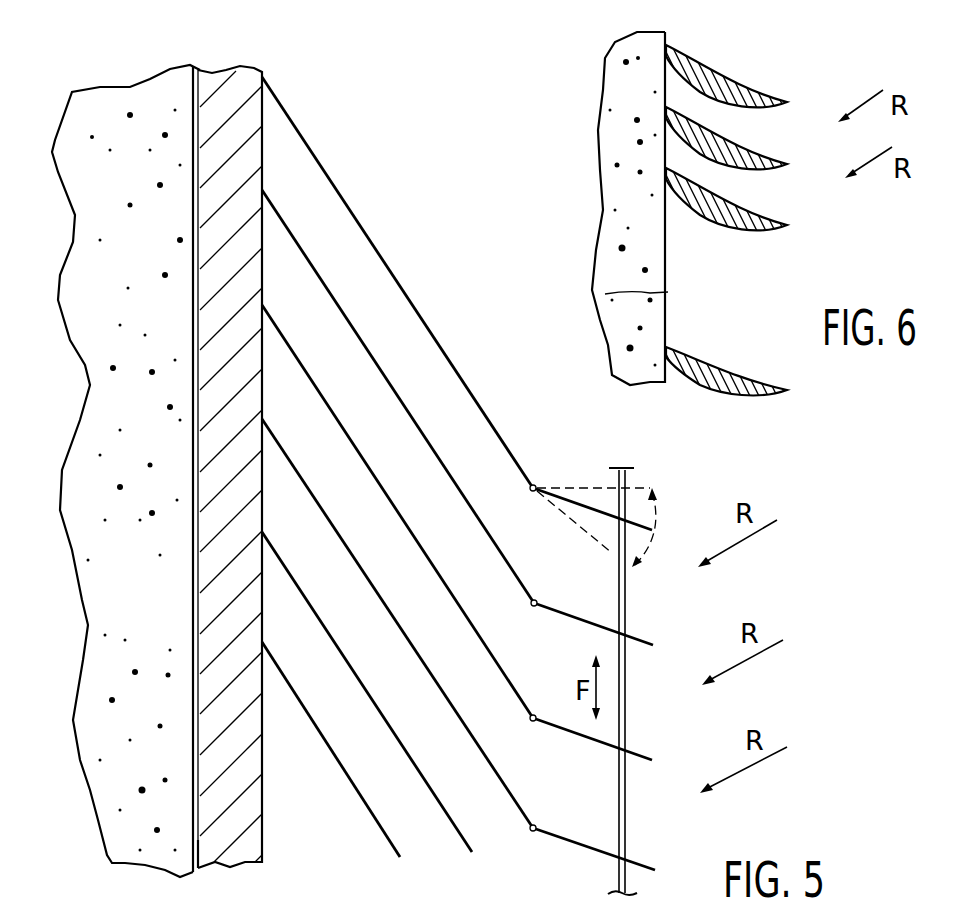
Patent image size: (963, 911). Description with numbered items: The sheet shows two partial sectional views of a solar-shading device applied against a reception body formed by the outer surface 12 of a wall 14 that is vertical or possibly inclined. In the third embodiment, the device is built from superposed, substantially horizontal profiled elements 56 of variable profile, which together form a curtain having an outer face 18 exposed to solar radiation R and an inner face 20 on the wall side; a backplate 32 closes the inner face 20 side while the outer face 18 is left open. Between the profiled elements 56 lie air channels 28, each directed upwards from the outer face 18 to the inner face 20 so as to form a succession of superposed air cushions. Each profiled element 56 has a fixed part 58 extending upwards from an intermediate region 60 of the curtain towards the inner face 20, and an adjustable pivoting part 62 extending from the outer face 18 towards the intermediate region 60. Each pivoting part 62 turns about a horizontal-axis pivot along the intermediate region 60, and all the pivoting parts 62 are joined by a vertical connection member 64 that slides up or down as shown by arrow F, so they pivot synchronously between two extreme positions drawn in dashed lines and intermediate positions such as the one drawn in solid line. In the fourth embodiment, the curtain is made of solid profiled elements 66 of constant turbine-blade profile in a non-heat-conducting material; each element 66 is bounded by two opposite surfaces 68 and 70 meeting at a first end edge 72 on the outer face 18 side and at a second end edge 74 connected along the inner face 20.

In FIG. 5, the outer surface 12 is at (195, 818).
In FIG. 5, the wall 14 is at (78, 428).
In FIG. 6, the wall 14 is at (617, 181).
In FIG. 6, the outer face 18 is at (767, 287).
In FIG. 5, the inner face 20 is at (261, 605).
In FIG. 6, the inner face 20 is at (668, 292).
In FIG. 5, the air channels 28 is at (398, 467).
In FIG. 5, the backplate 32 is at (228, 73).
In FIG. 5, the profiled elements 56 is at (460, 378).
In FIG. 5, the fixed part 58 is at (383, 252).
In FIG. 5, the intermediate region 60 is at (534, 485).
In FIG. 5, the adjustable pivoting part 62 is at (585, 505).
In FIG. 5, the connection member 64 is at (619, 877).
In FIG. 6, the profiled elements 66 is at (748, 213).
In FIG. 6, the surface 68 is at (712, 76).
In FIG. 6, the surface 70 is at (738, 106).
In FIG. 6, the first end edge 72 is at (790, 100).
In FIG. 6, the second end edge 74 is at (667, 45).